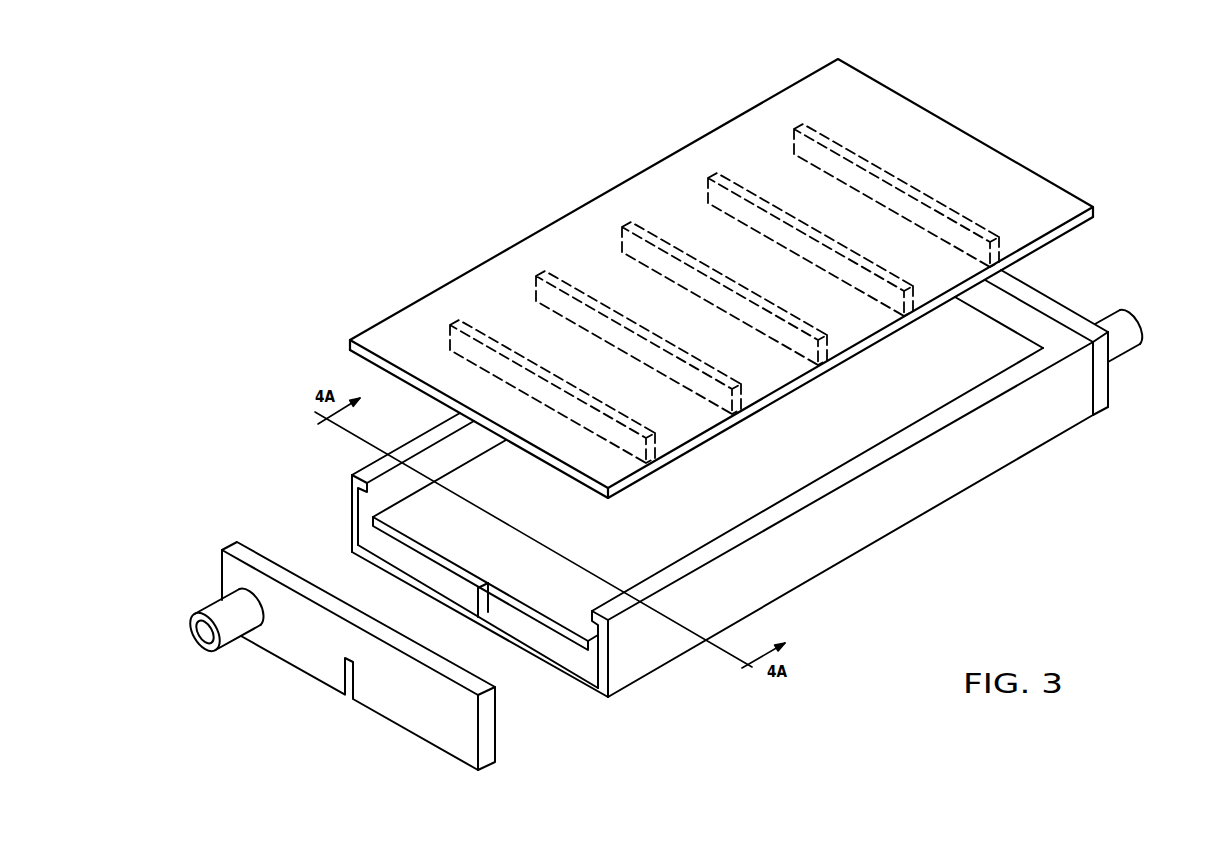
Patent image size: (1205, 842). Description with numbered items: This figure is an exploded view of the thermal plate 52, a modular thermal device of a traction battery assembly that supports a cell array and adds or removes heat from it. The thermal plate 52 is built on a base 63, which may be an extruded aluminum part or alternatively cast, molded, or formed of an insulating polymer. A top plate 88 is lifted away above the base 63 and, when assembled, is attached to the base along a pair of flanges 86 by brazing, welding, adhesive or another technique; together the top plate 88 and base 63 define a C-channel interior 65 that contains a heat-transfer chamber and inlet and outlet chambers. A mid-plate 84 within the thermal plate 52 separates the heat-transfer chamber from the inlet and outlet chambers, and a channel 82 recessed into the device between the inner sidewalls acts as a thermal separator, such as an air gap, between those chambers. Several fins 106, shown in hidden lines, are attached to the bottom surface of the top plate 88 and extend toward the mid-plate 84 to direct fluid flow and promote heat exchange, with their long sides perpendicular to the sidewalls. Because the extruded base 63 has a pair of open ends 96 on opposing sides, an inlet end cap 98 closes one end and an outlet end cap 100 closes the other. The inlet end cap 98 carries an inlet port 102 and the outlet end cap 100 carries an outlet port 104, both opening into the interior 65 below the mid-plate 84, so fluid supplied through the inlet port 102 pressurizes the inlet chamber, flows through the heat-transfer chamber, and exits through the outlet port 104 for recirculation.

The thermal plate 52 is at (1048, 109).
The base 63 is at (942, 472).
The C-channel interior 65 is at (583, 650).
The channel 82 is at (481, 622).
The mid-plate 84 is at (502, 545).
The flanges 86 is at (370, 472).
The top plate 88 is at (567, 237).
The open ends 96 is at (403, 558).
The inlet end cap 98 is at (358, 656).
The outlet end cap 100 is at (1053, 307).
The inlet port 102 is at (231, 622).
The outlet port 104 is at (1128, 336).
The fin 106 is at (833, 142).